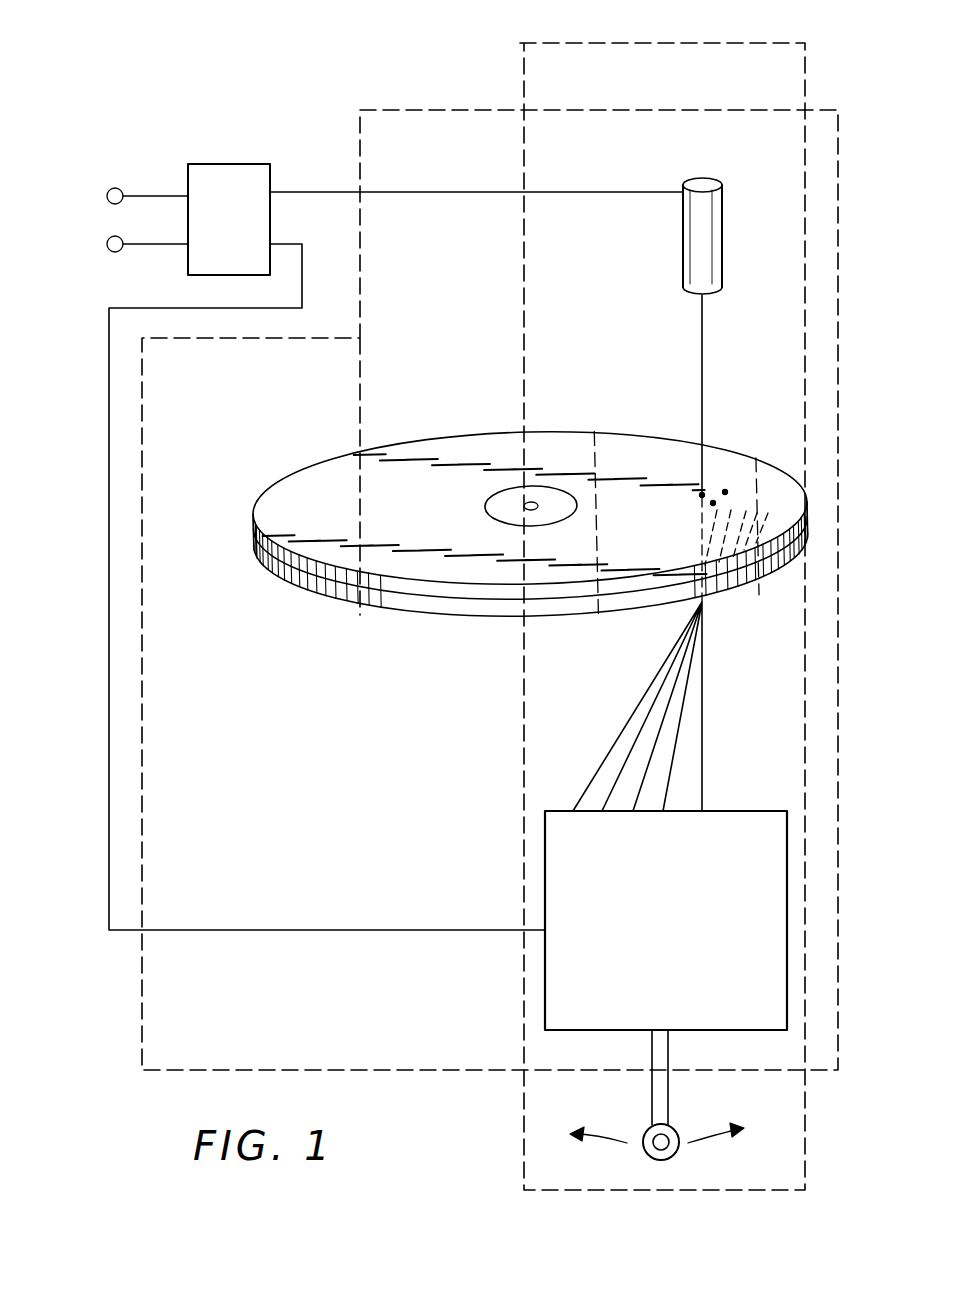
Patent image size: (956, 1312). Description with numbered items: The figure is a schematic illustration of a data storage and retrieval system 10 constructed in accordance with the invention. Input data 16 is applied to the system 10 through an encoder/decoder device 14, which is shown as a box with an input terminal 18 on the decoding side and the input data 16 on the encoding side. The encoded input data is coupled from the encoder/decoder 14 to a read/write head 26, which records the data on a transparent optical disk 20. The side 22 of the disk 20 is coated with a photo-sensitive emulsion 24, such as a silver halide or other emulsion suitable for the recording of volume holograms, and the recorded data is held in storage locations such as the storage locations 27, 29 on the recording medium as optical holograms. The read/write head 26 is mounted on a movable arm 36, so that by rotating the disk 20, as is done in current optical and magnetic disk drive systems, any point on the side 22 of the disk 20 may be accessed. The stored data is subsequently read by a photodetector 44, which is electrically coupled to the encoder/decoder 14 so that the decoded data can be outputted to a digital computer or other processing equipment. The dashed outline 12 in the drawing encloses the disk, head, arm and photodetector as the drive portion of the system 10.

The data storage and retrieval system 10 is at (92, 880).
The optical disk drive unit 12 is at (848, 218).
The encoder/decoder device 14 is at (238, 163).
The input data 16 is at (162, 244).
The data output terminal 18 is at (156, 196).
The transparent optical disk 20 is at (494, 533).
The side of disk 22 is at (326, 598).
The photo-sensitive emulsion 24 is at (292, 577).
The read/write head 26 is at (625, 42).
The storage location 27 is at (714, 500).
The storage location 29 is at (726, 490).
The movable arm 36 is at (668, 1095).
The photodetector 44 is at (690, 232).